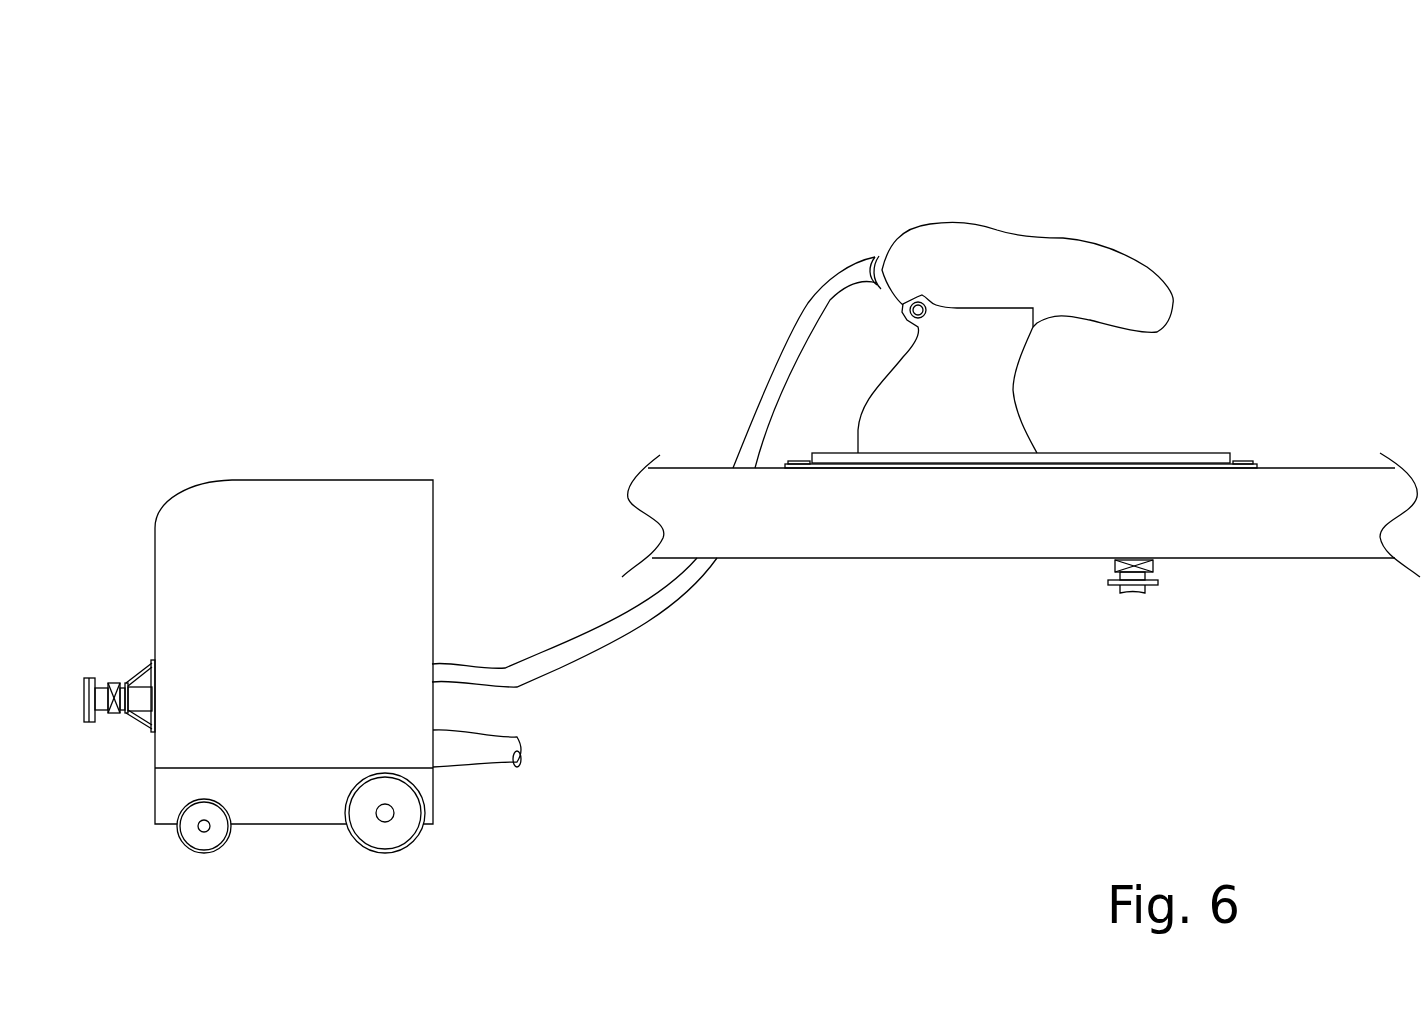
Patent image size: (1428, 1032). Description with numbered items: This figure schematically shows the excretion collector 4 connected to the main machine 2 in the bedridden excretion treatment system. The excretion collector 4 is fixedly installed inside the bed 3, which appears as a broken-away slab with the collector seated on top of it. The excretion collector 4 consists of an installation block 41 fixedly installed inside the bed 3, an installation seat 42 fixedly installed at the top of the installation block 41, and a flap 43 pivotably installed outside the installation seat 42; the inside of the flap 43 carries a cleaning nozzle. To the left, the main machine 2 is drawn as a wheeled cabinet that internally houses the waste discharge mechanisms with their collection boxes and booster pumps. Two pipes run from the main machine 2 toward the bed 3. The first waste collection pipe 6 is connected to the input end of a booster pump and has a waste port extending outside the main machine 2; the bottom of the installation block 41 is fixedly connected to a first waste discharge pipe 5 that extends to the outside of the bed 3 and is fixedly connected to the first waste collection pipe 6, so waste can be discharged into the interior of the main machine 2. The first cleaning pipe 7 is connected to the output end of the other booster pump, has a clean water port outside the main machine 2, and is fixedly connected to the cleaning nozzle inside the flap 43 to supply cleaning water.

The main machine 2 is at (331, 736).
The bed 3 is at (773, 518).
The excretion collector 4 is at (1060, 237).
The installation block 41 is at (1088, 453).
The installation seat 42 is at (948, 353).
The flap 43 is at (1027, 239).
The first waste discharge pipe 5 is at (1140, 560).
The first waste collection pipe 6 is at (475, 768).
The first cleaning pipe 7 is at (595, 662).